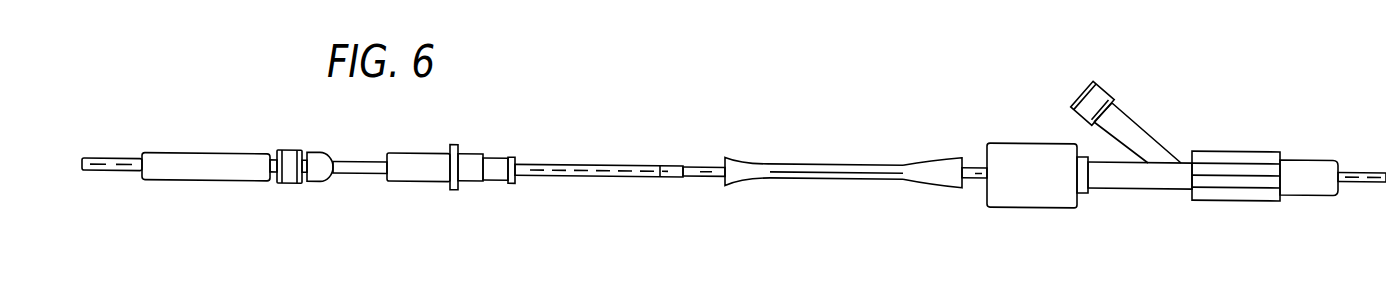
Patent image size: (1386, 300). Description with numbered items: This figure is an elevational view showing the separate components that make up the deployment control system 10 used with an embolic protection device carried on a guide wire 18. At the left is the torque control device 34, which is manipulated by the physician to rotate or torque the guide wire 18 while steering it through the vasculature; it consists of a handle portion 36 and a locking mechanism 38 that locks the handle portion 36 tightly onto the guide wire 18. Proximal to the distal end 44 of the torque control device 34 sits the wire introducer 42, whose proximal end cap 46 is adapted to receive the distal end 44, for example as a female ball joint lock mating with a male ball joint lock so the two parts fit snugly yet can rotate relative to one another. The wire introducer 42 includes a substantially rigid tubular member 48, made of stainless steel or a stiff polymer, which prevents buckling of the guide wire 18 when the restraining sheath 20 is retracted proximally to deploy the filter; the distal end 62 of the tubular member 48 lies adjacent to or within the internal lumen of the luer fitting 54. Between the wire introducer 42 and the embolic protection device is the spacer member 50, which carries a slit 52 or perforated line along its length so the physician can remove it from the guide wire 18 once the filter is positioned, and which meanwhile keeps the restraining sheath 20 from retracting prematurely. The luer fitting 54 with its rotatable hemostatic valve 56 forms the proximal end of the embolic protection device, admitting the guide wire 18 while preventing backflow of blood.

The deployment control system 10 is at (868, 142).
The guide wire 18 is at (108, 163).
The restraining sheath 20 is at (1303, 175).
The torque control device 34 is at (200, 191).
The handle portion 36 is at (213, 161).
The locking mechanism 38 is at (290, 158).
The wire introducer 42 is at (600, 156).
The distal end of the torque control device 44 is at (320, 165).
The proximal end cap 46 is at (418, 167).
The tubular member 48 is at (553, 165).
The spacer member 50 is at (752, 158).
The slit 52 is at (858, 173).
The luer fitting 54 is at (1140, 145).
The rotatable hemostatic valve 56 is at (1020, 160).
The distal end of the tubular member 62 is at (671, 178).